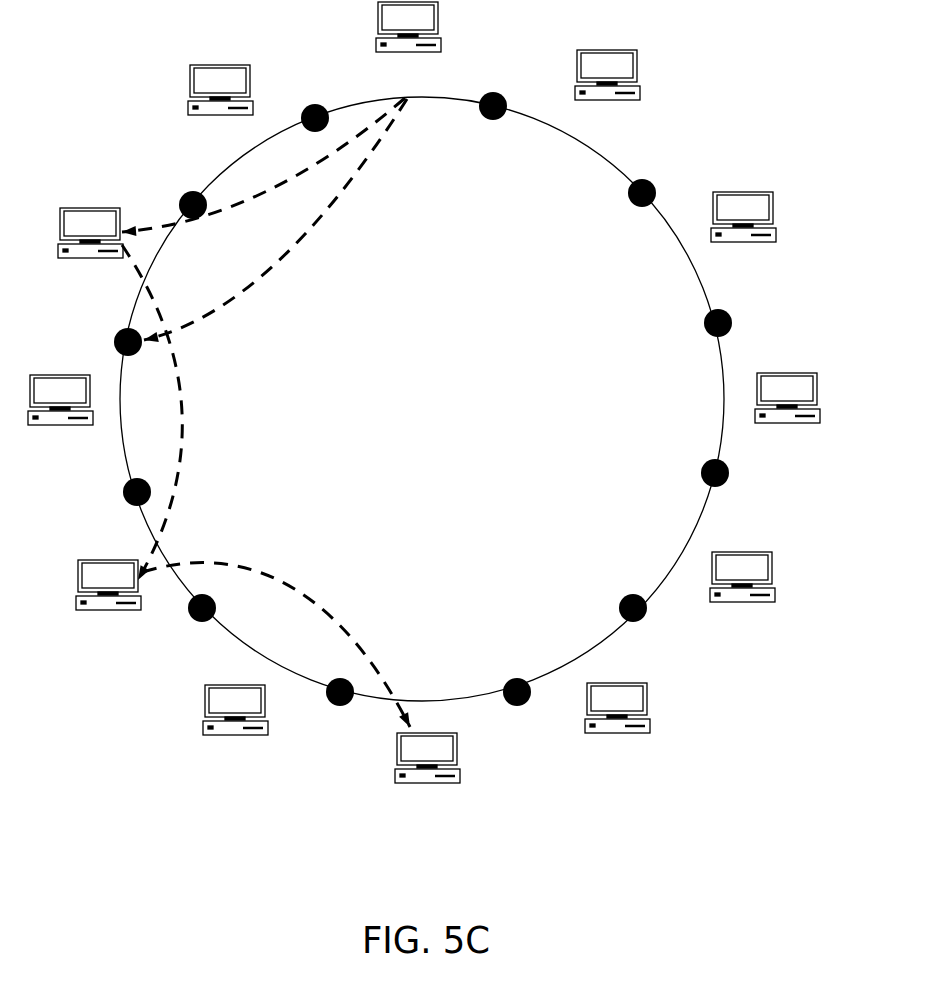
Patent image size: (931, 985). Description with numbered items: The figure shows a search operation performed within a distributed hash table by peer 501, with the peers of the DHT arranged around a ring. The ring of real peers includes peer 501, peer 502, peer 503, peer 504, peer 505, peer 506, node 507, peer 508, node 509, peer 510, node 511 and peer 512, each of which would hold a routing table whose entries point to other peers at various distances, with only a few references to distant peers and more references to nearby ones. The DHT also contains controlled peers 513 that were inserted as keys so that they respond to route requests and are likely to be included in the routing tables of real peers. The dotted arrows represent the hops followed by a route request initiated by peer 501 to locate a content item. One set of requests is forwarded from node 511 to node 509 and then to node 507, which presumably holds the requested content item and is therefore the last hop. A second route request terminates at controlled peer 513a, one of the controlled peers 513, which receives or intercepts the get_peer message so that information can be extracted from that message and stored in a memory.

The peer 501 is at (408, 47).
The peer 502 is at (607, 95).
The peer 503 is at (743, 238).
The peer 504 is at (787, 420).
The peer 505 is at (742, 598).
The peer 506 is at (617, 728).
The node 507 is at (427, 779).
The peer 508 is at (235, 732).
The node 509 is at (108, 605).
The peer 510 is at (60, 421).
The node 511 is at (90, 253).
The peer 512 is at (220, 111).
The controlled peers 513 is at (336, 150).
The controlled peer 513a is at (150, 342).